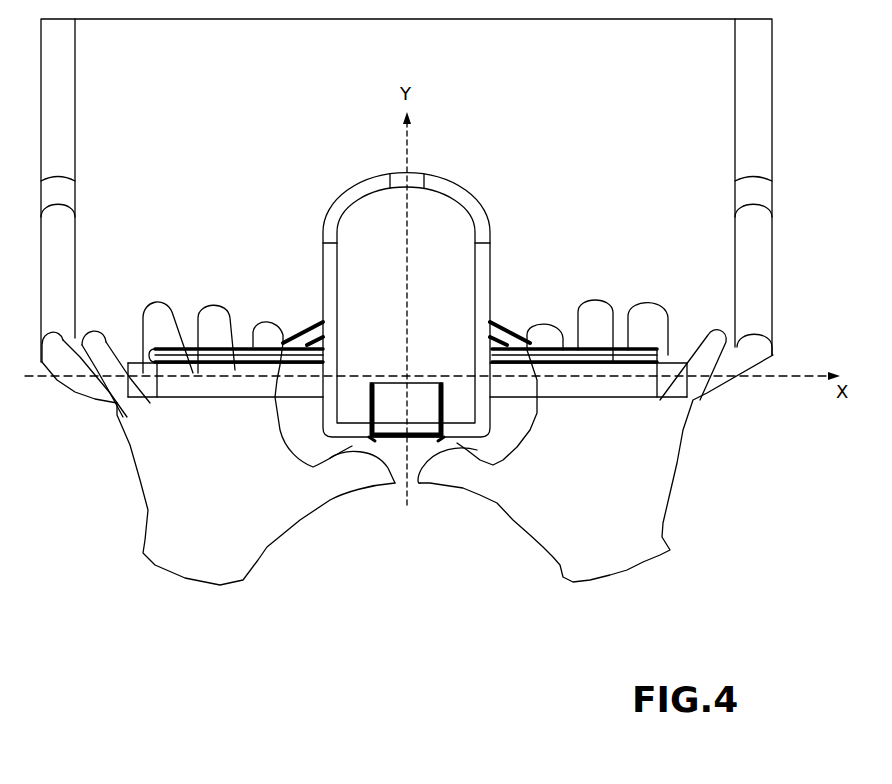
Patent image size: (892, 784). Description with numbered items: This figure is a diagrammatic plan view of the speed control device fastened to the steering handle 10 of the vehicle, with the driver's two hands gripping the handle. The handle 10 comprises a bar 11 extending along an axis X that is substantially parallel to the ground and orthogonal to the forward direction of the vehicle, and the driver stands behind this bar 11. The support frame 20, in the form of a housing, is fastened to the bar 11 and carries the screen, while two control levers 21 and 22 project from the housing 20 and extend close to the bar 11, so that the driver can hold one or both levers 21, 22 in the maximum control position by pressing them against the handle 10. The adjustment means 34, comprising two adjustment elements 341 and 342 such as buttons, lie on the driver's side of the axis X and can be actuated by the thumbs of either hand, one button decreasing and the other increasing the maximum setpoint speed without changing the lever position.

The steering handle 10 is at (735, 193).
The bar 11 is at (515, 393).
The support frame 20 is at (407, 247).
The control lever 21 is at (204, 310).
The control lever 22 is at (632, 352).
The adjustment means 34 is at (395, 483).
The adjustment element 341 is at (353, 443).
The adjustment element 342 is at (457, 443).